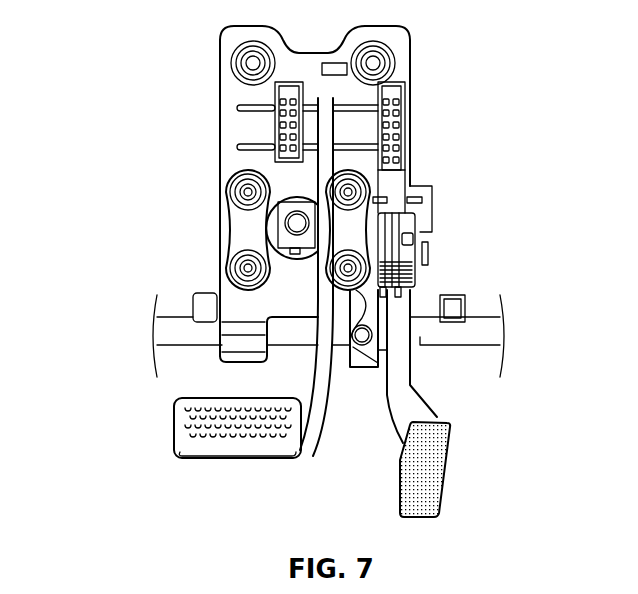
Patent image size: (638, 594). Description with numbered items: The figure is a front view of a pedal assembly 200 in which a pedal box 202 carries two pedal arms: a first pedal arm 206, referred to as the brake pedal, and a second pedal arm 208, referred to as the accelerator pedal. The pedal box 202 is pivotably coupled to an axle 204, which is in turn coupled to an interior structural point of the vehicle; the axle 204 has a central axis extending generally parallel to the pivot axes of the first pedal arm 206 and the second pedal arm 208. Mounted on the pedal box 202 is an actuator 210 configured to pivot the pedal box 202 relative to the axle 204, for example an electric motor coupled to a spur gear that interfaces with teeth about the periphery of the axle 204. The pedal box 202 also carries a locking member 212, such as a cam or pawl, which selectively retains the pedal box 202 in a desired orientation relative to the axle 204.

The pedal assembly 200 is at (124, 77).
The pedal box 202 is at (410, 63).
The axle 204 is at (487, 333).
The first pedal arm 206 is at (238, 435).
The second pedal arm 208 is at (433, 458).
The actuator 210 is at (203, 295).
The locking member 212 is at (453, 295).